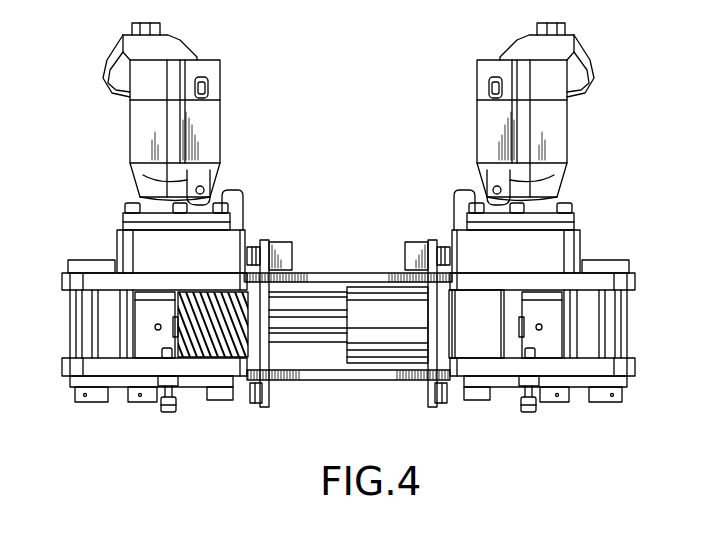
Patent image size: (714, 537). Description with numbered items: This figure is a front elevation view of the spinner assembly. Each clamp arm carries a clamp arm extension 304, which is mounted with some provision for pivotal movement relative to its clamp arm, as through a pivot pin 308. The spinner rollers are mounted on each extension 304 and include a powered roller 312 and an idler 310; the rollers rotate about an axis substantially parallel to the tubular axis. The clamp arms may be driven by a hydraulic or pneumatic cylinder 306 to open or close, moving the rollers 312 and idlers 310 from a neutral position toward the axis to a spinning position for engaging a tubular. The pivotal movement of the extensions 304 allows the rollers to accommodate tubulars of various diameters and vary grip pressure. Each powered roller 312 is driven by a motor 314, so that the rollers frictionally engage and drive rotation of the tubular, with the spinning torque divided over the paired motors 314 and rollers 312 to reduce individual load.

The clamp arm extension 304 is at (92, 369).
The hydraulic or pneumatic cylinder 306 is at (373, 320).
The pivot pin 308 is at (88, 264).
The idler roller 310 is at (499, 336).
The powered roller 312 is at (222, 350).
The motor 314 is at (210, 128).